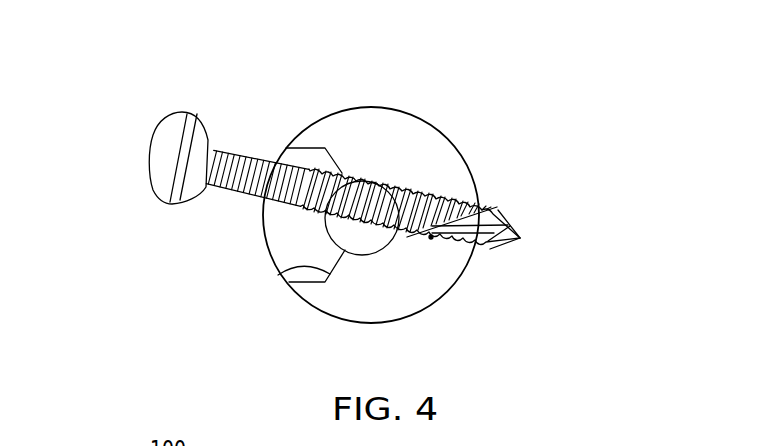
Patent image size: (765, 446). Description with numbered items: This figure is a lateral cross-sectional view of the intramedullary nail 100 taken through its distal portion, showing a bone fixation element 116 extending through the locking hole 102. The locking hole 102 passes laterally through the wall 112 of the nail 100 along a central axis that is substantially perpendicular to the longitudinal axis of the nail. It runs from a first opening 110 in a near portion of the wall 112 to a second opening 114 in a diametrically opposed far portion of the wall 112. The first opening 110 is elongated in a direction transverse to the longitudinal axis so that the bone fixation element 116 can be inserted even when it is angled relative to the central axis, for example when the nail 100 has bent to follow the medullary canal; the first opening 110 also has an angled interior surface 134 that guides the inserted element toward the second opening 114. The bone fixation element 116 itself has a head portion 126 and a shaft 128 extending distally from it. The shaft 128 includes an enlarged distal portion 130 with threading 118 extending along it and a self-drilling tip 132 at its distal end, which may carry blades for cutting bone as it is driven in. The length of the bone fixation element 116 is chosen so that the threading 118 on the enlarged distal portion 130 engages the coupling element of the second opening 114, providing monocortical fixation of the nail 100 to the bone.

The intramedullary nail 100 is at (326, 203).
The locking hole 102 is at (311, 158).
The first opening 110 is at (333, 205).
The wall 112 is at (322, 130).
The second opening 114 is at (462, 198).
The bone fixation element 116 is at (326, 171).
The threading 118 is at (368, 238).
The head portion 126 is at (152, 170).
The shaft 128 is at (205, 186).
The enlarged distal portion 130 is at (365, 182).
The self-drilling tip 132 is at (496, 247).
The angled interior surface 134 is at (281, 275).